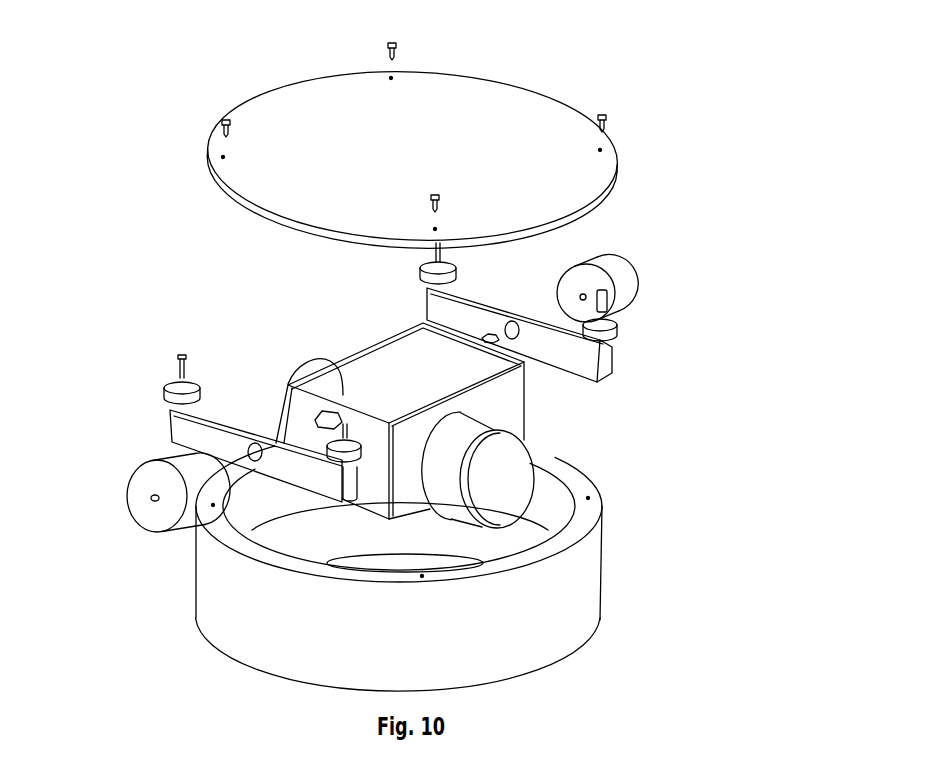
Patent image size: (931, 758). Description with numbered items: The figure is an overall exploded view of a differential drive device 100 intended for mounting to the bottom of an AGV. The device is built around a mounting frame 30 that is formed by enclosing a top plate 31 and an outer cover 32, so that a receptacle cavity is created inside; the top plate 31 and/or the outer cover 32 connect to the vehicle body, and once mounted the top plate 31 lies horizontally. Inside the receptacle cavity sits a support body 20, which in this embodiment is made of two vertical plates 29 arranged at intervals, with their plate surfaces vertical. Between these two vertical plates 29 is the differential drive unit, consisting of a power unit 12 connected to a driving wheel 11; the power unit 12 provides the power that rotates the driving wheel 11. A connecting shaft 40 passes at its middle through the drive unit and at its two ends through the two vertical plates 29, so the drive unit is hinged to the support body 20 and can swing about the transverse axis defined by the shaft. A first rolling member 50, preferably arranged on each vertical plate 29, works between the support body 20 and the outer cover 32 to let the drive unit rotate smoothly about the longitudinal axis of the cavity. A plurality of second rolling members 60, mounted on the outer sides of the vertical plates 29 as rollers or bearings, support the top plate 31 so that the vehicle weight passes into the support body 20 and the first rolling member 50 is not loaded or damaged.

The differential drive device 100 is at (160, 233).
The top plate 31 is at (580, 121).
The mounting frame 30 is at (489, 568).
The outer cover 32 is at (603, 545).
The power unit 12 is at (422, 345).
The driving wheel 11 is at (505, 455).
The support body 20 is at (399, 395).
The vertical plate 29 is at (203, 435).
The connecting shaft 40 is at (327, 413).
The first rolling member 50 is at (420, 273).
The second rolling member 60 is at (143, 492).